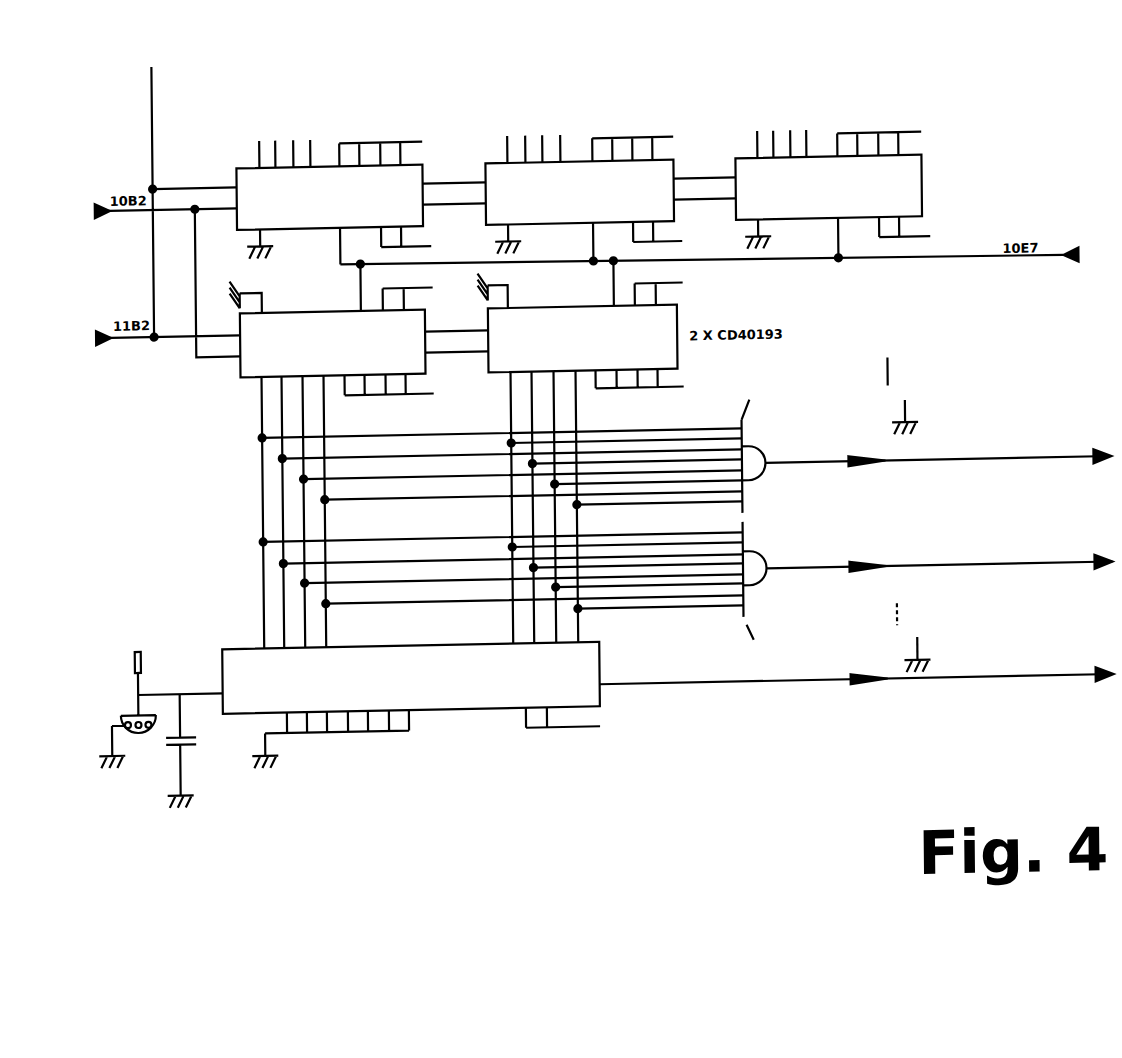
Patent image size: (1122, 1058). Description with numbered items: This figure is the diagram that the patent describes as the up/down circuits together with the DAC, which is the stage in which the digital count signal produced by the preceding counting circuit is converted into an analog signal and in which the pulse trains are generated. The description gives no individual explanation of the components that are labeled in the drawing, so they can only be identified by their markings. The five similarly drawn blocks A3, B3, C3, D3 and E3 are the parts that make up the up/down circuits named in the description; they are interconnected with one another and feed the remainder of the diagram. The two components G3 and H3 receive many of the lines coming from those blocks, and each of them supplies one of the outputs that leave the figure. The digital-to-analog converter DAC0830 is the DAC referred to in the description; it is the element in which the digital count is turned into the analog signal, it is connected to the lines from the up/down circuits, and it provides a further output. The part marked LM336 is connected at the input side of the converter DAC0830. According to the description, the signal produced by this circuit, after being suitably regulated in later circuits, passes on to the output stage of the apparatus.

The CD40193 up/down counter A3 is at (339, 201).
The CD40193 up/down counter B3 is at (589, 197).
The CD40193 up/down counter C3 is at (838, 193).
The CD40193 up/down counter D3 is at (336, 333).
The CD40193 up/down counter E3 is at (585, 328).
The 4068 eight-input NAND gate G3 is at (685, 430).
The 4078 eight-input NOR gate H3 is at (687, 599).
The digital-to-analog converter DAC0830 is at (668, 710).
The LM336 voltage reference LM336 is at (159, 721).